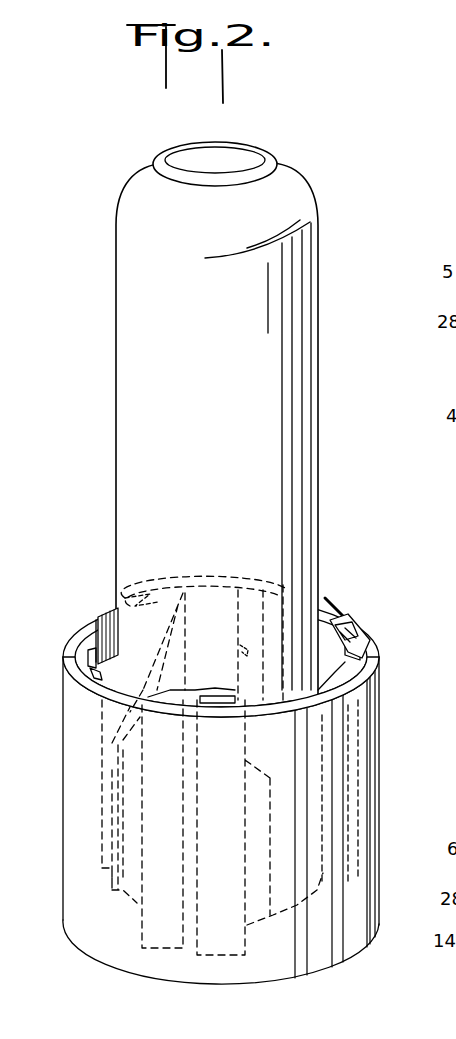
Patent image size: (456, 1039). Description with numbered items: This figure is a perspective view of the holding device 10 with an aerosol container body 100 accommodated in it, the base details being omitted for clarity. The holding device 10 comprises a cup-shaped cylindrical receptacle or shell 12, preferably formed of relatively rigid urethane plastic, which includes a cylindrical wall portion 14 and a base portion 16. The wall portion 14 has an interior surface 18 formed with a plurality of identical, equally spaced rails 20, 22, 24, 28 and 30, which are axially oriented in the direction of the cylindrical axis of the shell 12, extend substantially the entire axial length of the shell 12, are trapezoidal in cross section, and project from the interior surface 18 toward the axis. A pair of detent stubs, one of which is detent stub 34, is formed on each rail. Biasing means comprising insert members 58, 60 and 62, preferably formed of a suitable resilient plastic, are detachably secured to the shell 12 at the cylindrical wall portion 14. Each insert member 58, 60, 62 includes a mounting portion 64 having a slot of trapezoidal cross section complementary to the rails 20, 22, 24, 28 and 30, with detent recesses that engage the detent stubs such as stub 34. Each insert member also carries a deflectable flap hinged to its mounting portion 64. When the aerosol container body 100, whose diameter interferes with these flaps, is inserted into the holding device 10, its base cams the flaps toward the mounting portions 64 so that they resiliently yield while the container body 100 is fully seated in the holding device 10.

The holding device 10 is at (377, 583).
The shell 12 is at (385, 742).
The cylindrical wall portion 14 is at (380, 790).
The base portion 16 is at (278, 977).
The interior surface 18 is at (93, 670).
The rail 20 is at (250, 593).
The rail 22 is at (350, 630).
The rail 24 is at (297, 690).
The rail 28 is at (92, 660).
The rail 30 is at (130, 590).
The detent stub 34 is at (240, 648).
The insert member 58 is at (108, 612).
The insert member 60 is at (343, 617).
The insert member 62 is at (215, 693).
The mounting portion 64 is at (107, 630).
The aerosol container body 100 is at (320, 404).